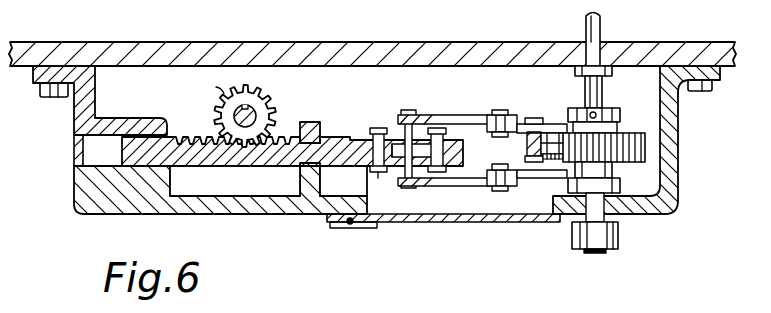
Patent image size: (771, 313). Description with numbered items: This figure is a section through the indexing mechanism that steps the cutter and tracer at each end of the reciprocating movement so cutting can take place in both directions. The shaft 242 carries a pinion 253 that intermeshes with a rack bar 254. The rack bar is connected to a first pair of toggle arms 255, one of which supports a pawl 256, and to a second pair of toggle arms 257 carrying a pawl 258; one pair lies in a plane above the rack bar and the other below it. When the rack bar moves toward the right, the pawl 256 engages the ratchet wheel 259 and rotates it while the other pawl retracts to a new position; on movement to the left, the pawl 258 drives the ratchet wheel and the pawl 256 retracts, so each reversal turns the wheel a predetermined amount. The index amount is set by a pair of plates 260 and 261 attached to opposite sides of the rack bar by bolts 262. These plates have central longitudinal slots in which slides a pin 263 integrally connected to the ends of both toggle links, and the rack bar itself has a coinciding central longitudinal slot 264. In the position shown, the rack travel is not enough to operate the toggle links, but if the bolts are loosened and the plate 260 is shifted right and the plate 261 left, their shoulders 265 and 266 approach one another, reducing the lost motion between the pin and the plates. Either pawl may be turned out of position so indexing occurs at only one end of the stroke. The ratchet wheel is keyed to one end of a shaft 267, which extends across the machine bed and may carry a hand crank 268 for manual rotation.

The shaft 242 is at (258, 100).
The pinion 253 is at (203, 86).
The rack bar 254 is at (215, 163).
The first pair of toggle arms 255 is at (480, 122).
The pawl 256 is at (546, 140).
The second pair of toggle arms 257 is at (472, 185).
The pawl 258 is at (533, 160).
The ratchet wheel 259 is at (647, 150).
The plate 260 is at (355, 138).
The plate 261 is at (358, 166).
The bolts 262 is at (378, 128).
The pin 263 is at (413, 122).
The central longitudinal slot 264 is at (380, 172).
The shoulder 265 is at (408, 110).
The shoulder 266 is at (420, 172).
The shaft 267 is at (594, 31).
The hand crank 268 is at (613, 237).